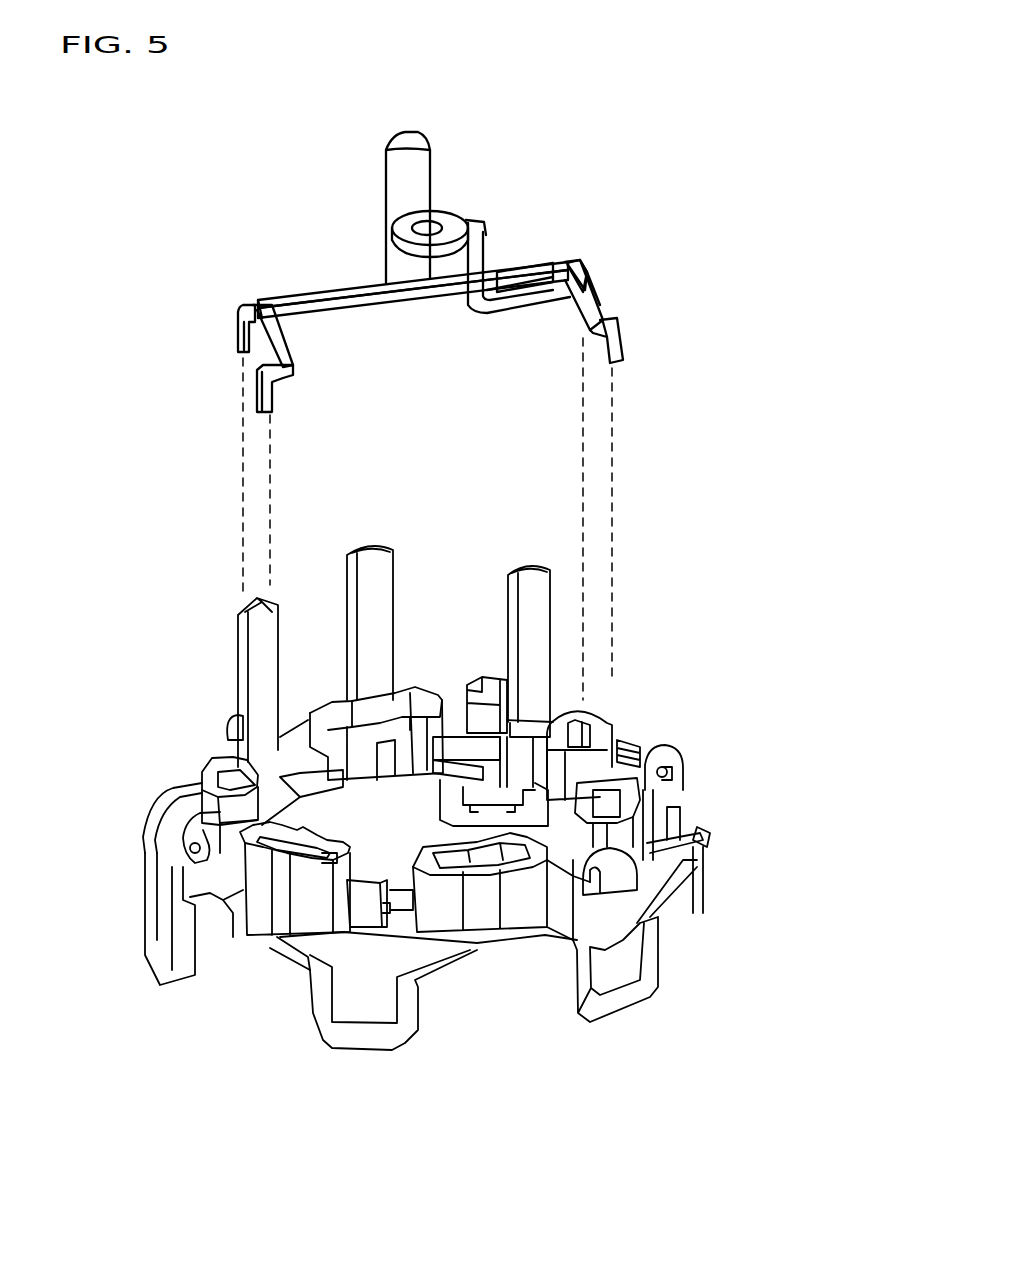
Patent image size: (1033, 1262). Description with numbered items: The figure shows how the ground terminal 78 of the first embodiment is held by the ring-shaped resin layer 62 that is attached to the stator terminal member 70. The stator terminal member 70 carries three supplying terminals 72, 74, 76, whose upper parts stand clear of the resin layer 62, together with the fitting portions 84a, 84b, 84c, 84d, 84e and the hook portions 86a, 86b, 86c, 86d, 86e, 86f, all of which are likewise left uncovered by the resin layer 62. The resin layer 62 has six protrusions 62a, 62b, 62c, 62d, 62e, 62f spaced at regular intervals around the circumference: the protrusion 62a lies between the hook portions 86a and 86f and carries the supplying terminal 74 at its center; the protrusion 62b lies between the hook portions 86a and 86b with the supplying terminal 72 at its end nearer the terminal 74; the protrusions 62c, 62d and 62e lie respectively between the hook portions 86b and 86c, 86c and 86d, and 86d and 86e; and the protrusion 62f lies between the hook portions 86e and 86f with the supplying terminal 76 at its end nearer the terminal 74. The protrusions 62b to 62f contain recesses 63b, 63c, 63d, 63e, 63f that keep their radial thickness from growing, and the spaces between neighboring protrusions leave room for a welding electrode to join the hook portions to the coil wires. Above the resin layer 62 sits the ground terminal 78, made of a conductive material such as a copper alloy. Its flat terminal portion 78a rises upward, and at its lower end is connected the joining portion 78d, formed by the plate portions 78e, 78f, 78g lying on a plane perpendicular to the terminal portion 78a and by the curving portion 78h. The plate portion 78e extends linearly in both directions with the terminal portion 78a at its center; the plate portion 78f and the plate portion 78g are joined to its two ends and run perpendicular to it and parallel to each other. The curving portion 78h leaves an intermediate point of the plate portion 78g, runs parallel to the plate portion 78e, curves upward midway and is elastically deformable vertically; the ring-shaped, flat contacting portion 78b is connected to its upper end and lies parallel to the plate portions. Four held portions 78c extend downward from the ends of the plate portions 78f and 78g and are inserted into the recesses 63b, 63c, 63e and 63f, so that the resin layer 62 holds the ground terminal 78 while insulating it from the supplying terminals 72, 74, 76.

The resin layer 62 is at (553, 872).
The protrusion 62a is at (420, 703).
The protrusion 62b is at (598, 728).
The protrusion 62c is at (640, 800).
The protrusion 62d is at (530, 900).
The protrusion 62e is at (277, 877).
The protrusion 62f is at (207, 772).
The recess 63b is at (587, 723).
The recess 63c is at (655, 770).
The recess 63d is at (500, 855).
The recess 63e is at (268, 838).
The recess 63f is at (225, 775).
The stator terminal member 70 is at (541, 542).
The supplying terminal 72 is at (522, 593).
The supplying terminal 74 is at (375, 563).
The supplying terminal 76 is at (273, 657).
The ground terminal 78 is at (522, 126).
The terminal portion 78a is at (405, 152).
The contacting portion 78b is at (445, 216).
The held portion 78c is at (237, 328).
The joining portion 78d is at (414, 313).
The plate portion 78e is at (323, 290).
The plate portion 78f is at (273, 340).
The plate portion 78g is at (583, 302).
The curving portion 78h is at (513, 308).
The fitting portion 84a is at (443, 790).
The fitting portion 84b is at (677, 820).
The fitting portion 84c is at (630, 1000).
The fitting portion 84d is at (360, 1033).
The fitting portion 84e is at (163, 950).
The hook portion 86a is at (487, 683).
The hook portion 86b is at (665, 750).
The hook portion 86c is at (613, 867).
The hook portion 86d is at (370, 880).
The hook portion 86e is at (177, 790).
The hook portion 86f is at (228, 727).